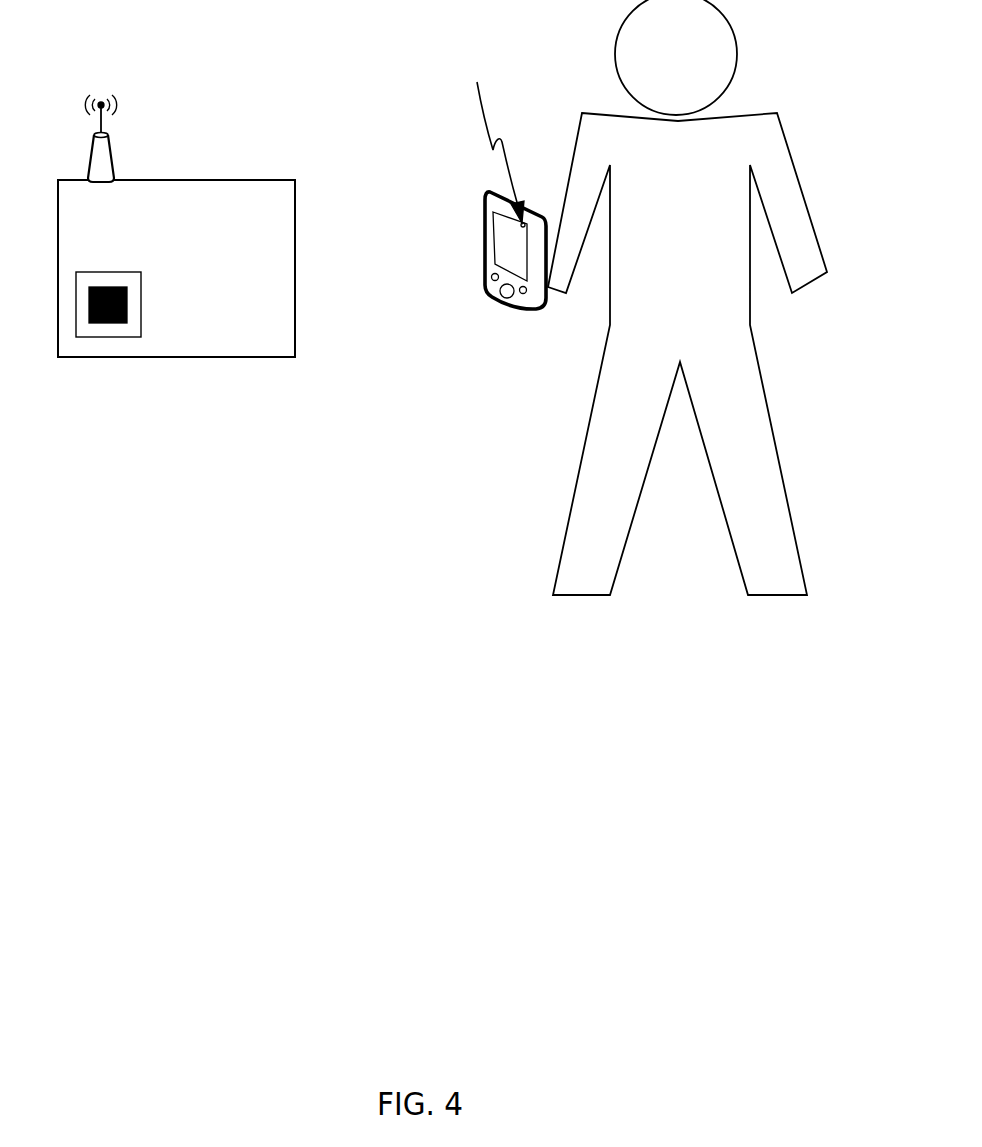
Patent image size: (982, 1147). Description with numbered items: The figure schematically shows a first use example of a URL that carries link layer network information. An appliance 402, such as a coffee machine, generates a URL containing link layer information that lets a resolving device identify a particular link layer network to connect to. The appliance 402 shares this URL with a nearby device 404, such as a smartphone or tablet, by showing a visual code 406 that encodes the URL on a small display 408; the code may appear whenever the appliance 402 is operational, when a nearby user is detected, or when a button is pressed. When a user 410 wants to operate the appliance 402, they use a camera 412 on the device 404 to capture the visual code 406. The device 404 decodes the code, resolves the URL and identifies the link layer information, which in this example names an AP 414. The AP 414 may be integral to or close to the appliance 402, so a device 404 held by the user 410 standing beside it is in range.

The appliance 402 is at (293, 205).
The device 404 is at (486, 280).
The visual code 406 is at (128, 308).
The display 408 is at (138, 290).
The user 410 is at (782, 145).
The camera 412 is at (494, 142).
The AP 414 is at (113, 157).